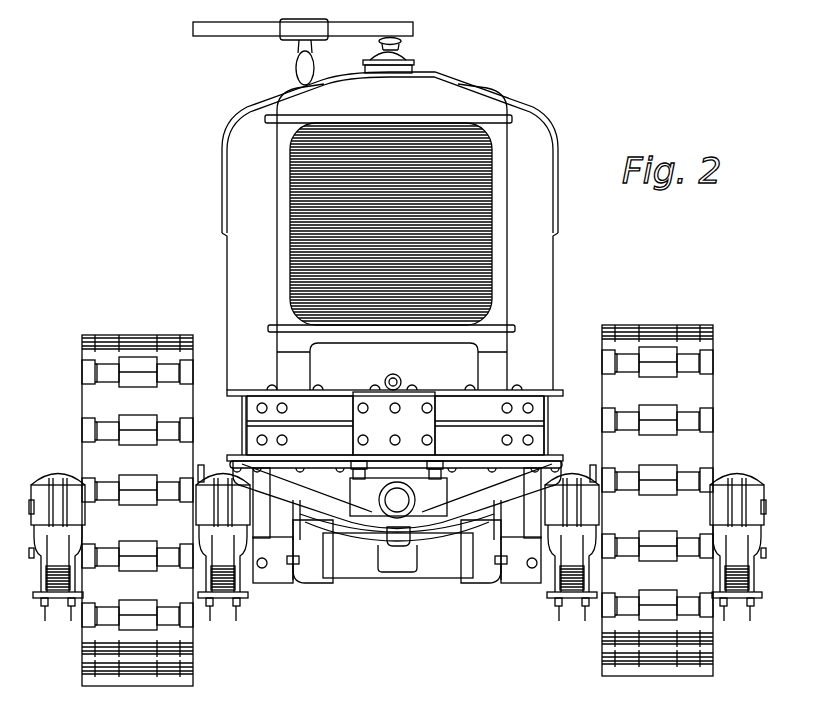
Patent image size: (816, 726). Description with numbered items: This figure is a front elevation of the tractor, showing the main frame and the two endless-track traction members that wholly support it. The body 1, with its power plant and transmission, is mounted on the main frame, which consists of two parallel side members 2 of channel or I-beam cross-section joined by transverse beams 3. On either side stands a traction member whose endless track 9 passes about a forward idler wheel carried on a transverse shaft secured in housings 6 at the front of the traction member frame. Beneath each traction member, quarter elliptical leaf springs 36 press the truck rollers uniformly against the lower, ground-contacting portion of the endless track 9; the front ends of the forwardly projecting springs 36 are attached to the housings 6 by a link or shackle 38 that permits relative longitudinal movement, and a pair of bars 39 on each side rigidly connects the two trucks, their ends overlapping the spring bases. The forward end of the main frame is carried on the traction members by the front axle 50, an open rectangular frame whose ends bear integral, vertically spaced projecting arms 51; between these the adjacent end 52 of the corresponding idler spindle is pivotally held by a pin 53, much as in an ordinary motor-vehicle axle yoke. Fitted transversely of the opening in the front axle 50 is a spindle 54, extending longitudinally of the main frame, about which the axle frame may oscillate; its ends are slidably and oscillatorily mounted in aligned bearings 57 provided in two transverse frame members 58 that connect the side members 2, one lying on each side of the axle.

The body 1 is at (556, 252).
The side members 2 is at (242, 427).
The transverse beams 3 is at (438, 397).
The housings 6 is at (52, 498).
The endless track 9 is at (81, 404).
The quarter elliptical leaf spring 36 is at (50, 588).
The link or shackle 38 is at (56, 538).
The bars 39 is at (66, 608).
The front axle 50 is at (378, 540).
The projecting arms 51 is at (313, 548).
The spindle end 52 is at (289, 523).
The pin 53 is at (291, 568).
The spindle 54 is at (401, 508).
The bearings 57 is at (383, 514).
The transverse frame members 58 is at (505, 482).